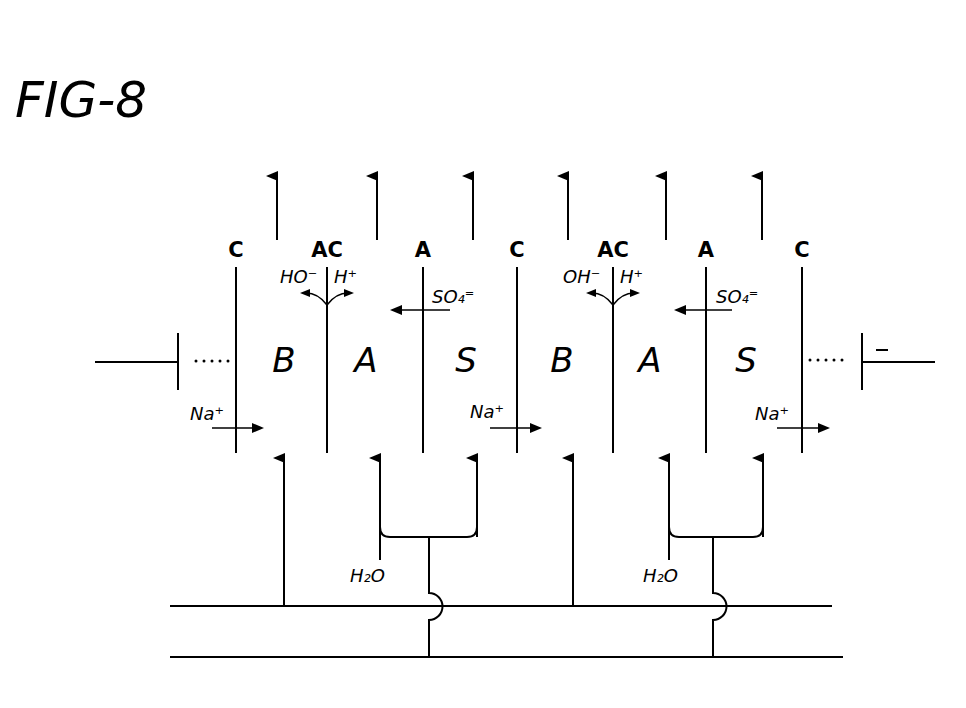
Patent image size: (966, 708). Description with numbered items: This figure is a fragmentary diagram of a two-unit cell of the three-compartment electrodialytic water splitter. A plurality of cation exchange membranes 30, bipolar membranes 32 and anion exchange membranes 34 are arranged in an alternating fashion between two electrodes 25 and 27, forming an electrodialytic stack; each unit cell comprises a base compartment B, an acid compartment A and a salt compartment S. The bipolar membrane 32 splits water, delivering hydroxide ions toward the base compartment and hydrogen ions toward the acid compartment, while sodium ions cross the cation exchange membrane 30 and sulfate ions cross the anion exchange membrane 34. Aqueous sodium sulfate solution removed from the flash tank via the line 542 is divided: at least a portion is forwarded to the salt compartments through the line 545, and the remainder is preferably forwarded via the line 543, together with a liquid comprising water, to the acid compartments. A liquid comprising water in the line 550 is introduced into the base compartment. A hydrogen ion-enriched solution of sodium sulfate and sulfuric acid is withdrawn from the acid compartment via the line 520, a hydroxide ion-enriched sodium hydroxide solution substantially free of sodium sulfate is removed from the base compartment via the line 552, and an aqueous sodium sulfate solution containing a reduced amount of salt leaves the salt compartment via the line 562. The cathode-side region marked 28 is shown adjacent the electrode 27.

The electrode 25 is at (133, 364).
The electrode 27 is at (918, 364).
The cathode compartment electrolyte 28 is at (840, 397).
The cation exchange membrane 30 is at (236, 440).
The bipolar membrane 32 is at (327, 440).
The anion exchange membrane 34 is at (423, 440).
The line 552 is at (277, 203).
The line 520 is at (377, 203).
The line 562 is at (473, 208).
The line 543 is at (380, 505).
The line 545 is at (477, 500).
The line 550 is at (790, 606).
The line 542 is at (778, 657).